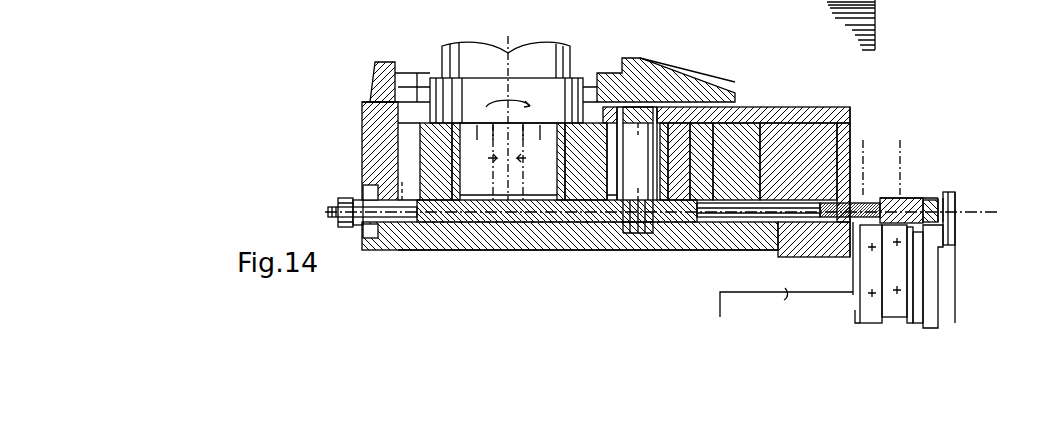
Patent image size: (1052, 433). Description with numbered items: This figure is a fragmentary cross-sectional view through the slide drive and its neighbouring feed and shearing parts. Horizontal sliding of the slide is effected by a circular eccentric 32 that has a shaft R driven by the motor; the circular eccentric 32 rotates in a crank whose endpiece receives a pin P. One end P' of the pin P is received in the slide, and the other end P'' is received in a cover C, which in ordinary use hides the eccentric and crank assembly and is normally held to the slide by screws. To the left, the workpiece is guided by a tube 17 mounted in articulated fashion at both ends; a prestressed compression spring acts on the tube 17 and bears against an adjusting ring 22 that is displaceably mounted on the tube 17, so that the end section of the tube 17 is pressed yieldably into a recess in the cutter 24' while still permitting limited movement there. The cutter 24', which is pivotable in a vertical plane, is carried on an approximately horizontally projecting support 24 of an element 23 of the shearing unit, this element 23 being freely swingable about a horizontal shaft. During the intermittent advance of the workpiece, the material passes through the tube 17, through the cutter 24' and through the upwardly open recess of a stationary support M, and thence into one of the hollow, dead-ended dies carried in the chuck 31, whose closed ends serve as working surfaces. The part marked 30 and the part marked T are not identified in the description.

The tube 17 is at (392, 222).
The adjusting ring 22 is at (350, 196).
The element 23 is at (611, 212).
The support 24 is at (875, 234).
The cutter 24' is at (906, 195).
The support 30 is at (957, 214).
The chuck 31 is at (953, 204).
The circular eccentric 32 is at (508, 188).
The cover C is at (548, 232).
The tool T is at (407, 181).
The shaft R is at (507, 158).
The pin P is at (637, 178).
The end of pin P' is at (660, 82).
The other end of pin P'' is at (645, 255).
The stationary support M is at (932, 202).